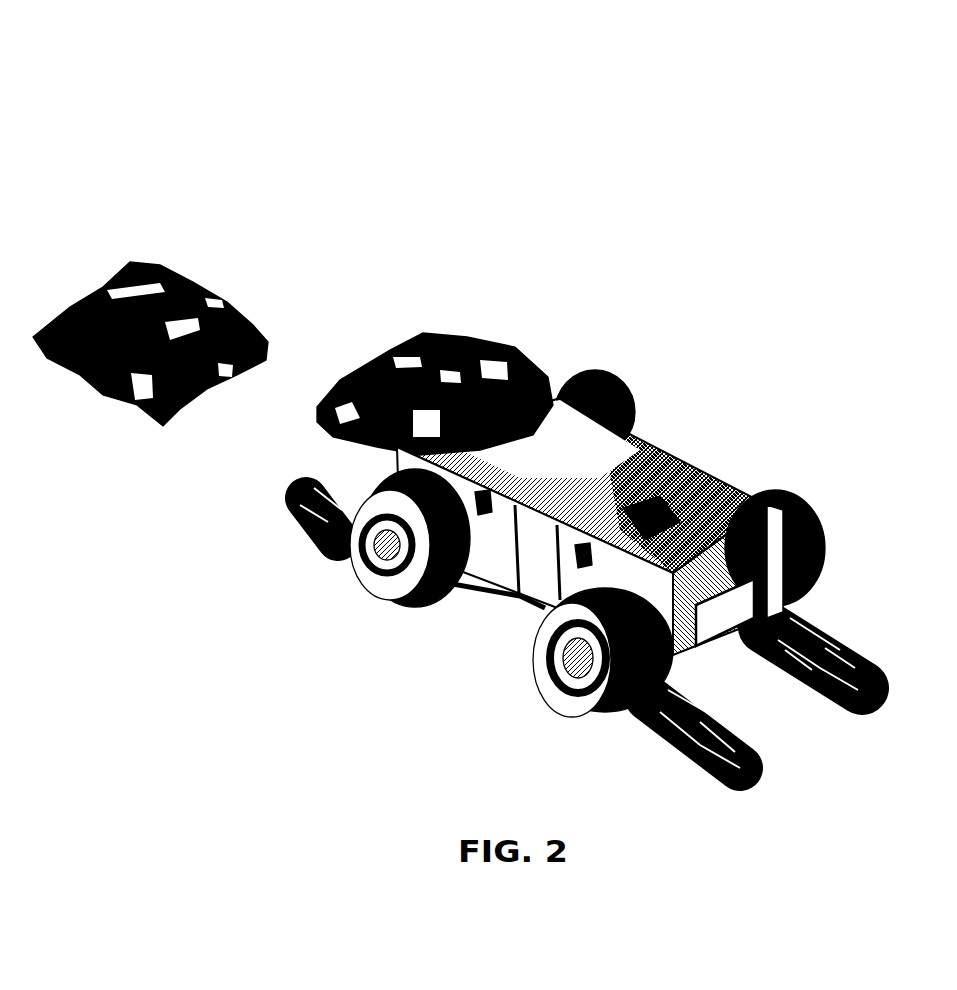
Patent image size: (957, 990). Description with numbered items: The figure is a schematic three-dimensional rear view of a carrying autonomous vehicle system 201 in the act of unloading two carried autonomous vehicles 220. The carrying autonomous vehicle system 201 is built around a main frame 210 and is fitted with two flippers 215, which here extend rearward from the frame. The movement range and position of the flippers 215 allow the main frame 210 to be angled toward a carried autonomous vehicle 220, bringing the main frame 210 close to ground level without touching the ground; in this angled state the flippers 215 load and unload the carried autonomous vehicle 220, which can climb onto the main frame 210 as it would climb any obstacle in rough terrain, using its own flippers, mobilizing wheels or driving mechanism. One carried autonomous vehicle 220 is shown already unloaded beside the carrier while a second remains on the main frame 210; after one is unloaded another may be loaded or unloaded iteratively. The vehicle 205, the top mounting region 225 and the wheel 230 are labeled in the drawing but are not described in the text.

The carrying autonomous vehicle system 201 is at (447, 428).
The vehicle 205 is at (512, 561).
The main frame 210 is at (553, 477).
The flippers 215 is at (655, 742).
The carried autonomous vehicle 220 is at (478, 335).
The module mounting surface 225 is at (630, 484).
The wheel 230 is at (348, 559).